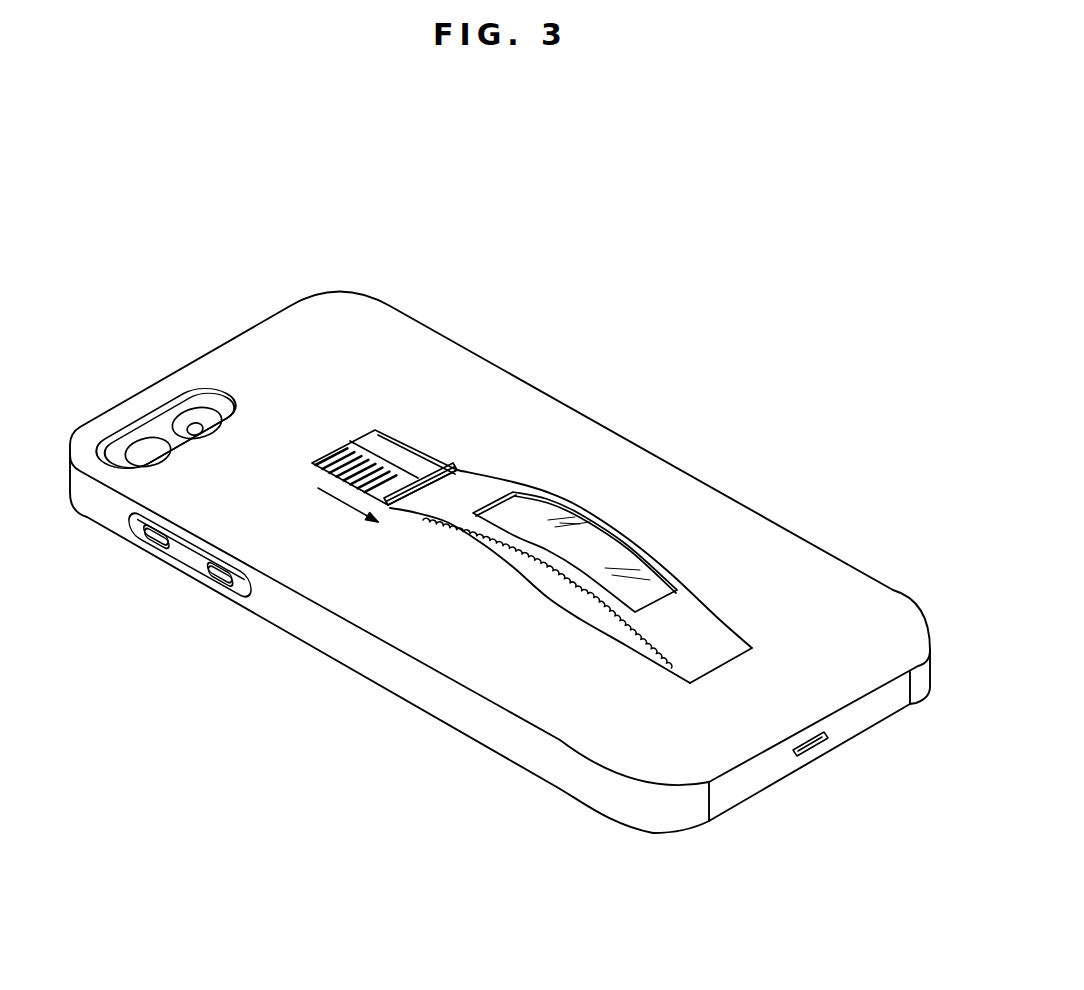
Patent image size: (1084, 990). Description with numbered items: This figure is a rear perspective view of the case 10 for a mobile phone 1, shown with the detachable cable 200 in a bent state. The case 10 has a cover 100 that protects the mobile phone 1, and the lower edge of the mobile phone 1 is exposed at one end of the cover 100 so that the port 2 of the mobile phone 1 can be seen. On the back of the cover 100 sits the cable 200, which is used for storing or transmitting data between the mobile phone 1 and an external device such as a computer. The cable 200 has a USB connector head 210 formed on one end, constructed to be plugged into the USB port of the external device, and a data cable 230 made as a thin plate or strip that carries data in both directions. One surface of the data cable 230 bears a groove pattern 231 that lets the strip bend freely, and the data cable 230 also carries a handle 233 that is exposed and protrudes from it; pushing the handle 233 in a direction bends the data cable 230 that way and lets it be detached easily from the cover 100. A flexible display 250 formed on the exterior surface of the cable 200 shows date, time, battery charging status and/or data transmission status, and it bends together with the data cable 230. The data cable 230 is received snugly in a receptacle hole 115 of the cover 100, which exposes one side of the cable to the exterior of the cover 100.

The case 10 is at (500, 539).
The cover 100 is at (500, 563).
The receptacle hole 115 is at (547, 590).
The detachable cable 200 is at (522, 528).
The USB connector head 210 is at (351, 445).
The data cable 230 is at (492, 488).
The groove pattern 231 is at (590, 597).
The handle 233 is at (458, 468).
The flexible display 250 is at (582, 528).
The mobile phone 1 is at (757, 790).
The port 2 is at (813, 753).